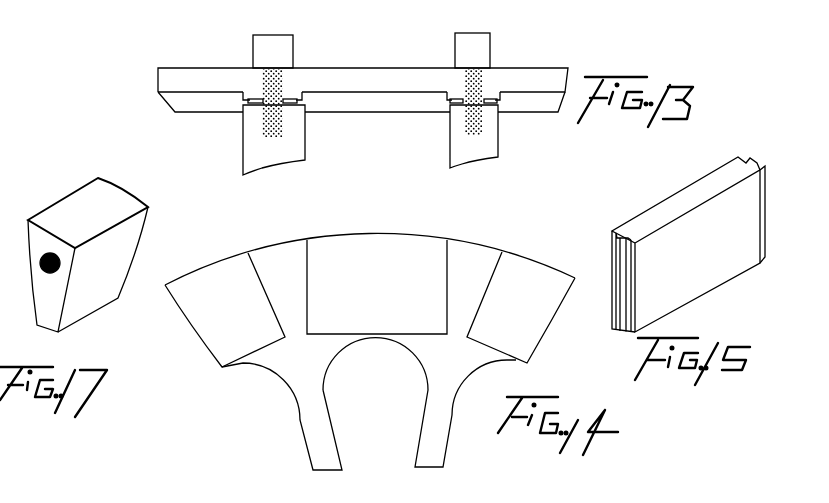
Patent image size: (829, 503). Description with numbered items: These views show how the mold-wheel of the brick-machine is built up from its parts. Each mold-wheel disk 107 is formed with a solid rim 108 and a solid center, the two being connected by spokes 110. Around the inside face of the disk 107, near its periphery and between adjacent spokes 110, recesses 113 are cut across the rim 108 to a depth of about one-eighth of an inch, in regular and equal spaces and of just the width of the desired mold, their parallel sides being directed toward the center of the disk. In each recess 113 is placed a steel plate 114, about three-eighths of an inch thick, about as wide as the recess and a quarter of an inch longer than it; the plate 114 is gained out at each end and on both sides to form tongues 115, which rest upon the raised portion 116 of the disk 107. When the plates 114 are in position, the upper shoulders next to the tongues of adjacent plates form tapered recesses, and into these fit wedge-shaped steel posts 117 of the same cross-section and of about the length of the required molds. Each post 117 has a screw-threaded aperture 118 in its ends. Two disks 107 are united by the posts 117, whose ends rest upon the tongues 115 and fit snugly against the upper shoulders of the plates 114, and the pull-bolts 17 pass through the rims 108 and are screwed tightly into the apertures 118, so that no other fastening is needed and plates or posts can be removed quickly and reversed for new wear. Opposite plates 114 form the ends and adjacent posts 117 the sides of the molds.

In FIG. 13, the pull-bolt 17 is at (371, 50).
In FIG. 13, the mold-wheel disk 107 is at (366, 57).
In FIG. 14, the mold-wheel disk 107 is at (375, 420).
In FIG. 14, the rim 108 is at (427, 232).
In FIG. 14, the spoke 110 is at (430, 425).
In FIG. 13, the recess 113 is at (536, 91).
In FIG. 14, the recess 113 is at (377, 287).
In FIG. 13, the steel plate 114 is at (361, 99).
In FIG. 15, the steel plate 114 is at (688, 244).
In FIG. 13, the tongue 115 is at (452, 95).
In FIG. 15, the tongue 115 is at (775, 153).
In FIG. 13, the raised portion 116 is at (489, 93).
In FIG. 14, the raised portion 116 is at (370, 309).
In FIG. 13, the wedge-shaped steel post 117 is at (370, 122).
In FIG. 17, the wedge-shaped steel post 117 is at (88, 255).
In FIG. 17, the screw-threaded aperture 118 is at (52, 273).